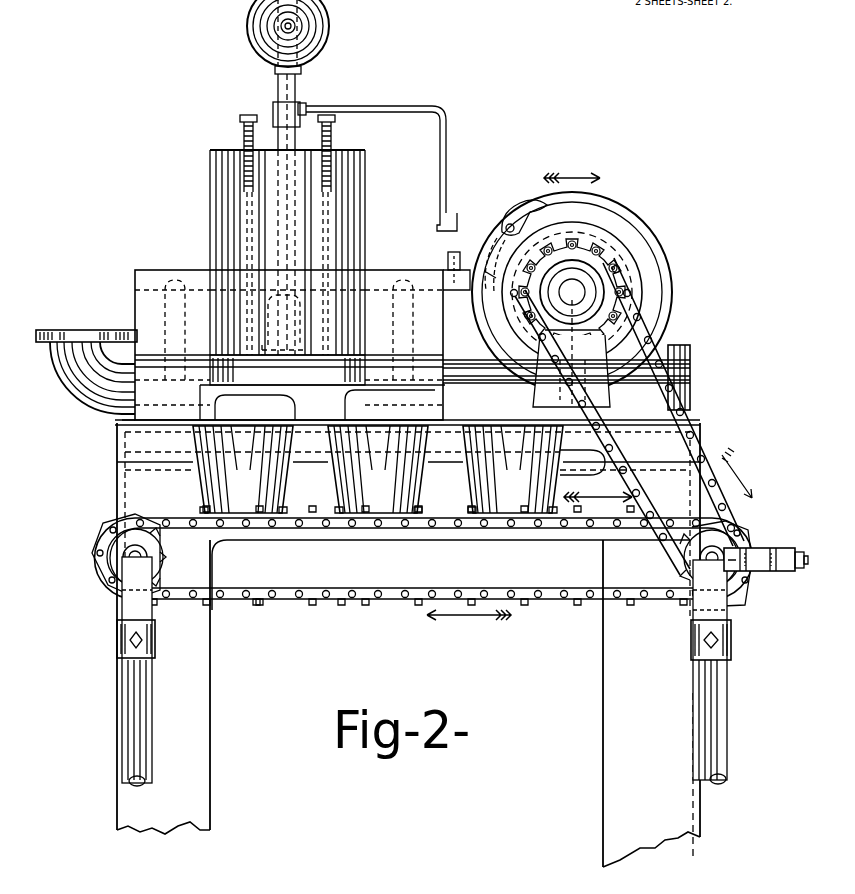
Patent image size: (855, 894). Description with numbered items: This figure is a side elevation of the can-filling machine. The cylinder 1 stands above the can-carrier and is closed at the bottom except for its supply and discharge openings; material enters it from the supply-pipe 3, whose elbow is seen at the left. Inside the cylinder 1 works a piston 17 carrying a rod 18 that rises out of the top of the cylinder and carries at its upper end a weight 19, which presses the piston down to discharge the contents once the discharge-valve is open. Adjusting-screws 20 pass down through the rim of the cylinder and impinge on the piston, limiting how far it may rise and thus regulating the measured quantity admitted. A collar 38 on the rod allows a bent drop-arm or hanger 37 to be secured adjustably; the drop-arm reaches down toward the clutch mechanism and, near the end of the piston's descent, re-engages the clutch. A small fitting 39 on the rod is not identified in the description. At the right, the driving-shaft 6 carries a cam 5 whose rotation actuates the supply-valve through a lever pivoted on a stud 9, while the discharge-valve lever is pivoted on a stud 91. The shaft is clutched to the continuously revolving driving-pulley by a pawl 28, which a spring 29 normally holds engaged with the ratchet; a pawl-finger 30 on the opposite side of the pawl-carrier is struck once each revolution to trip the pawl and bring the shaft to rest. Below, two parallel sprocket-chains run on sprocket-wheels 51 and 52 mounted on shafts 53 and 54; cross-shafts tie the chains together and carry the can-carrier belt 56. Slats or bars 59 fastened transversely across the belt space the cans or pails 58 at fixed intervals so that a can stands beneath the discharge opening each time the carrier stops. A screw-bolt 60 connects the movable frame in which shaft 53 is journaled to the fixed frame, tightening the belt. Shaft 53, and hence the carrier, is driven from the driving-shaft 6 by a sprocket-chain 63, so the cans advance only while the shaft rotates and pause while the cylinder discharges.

The cylinder 1 is at (246, 196).
The supply-pipe 3 is at (90, 400).
The cam 5 is at (655, 292).
The driving-shaft 6 is at (576, 290).
The stud 9 is at (692, 368).
The piston 17 is at (265, 318).
The piston-rod 18 is at (298, 86).
The weight 19 is at (324, 27).
The adjusting-screws 20 is at (244, 135).
The pawl 28 is at (500, 268).
The spring 29 is at (503, 268).
The pawl-finger 30 is at (512, 224).
The drop-arm 37 is at (415, 107).
The collar 38 is at (306, 107).
The collar 39 is at (274, 117).
The sprocket-wheels 51 is at (683, 597).
The sprocket-wheels 52 is at (161, 556).
The shaft 53 is at (730, 592).
The shaft 54 is at (128, 553).
The can-carrier belt 56 is at (442, 516).
The cans or pails 58 is at (281, 500).
The slats or bars 59 is at (342, 606).
The screw-bolt 60 is at (790, 548).
The sprocket-chain 63 is at (693, 428).
The stud 91 is at (690, 349).